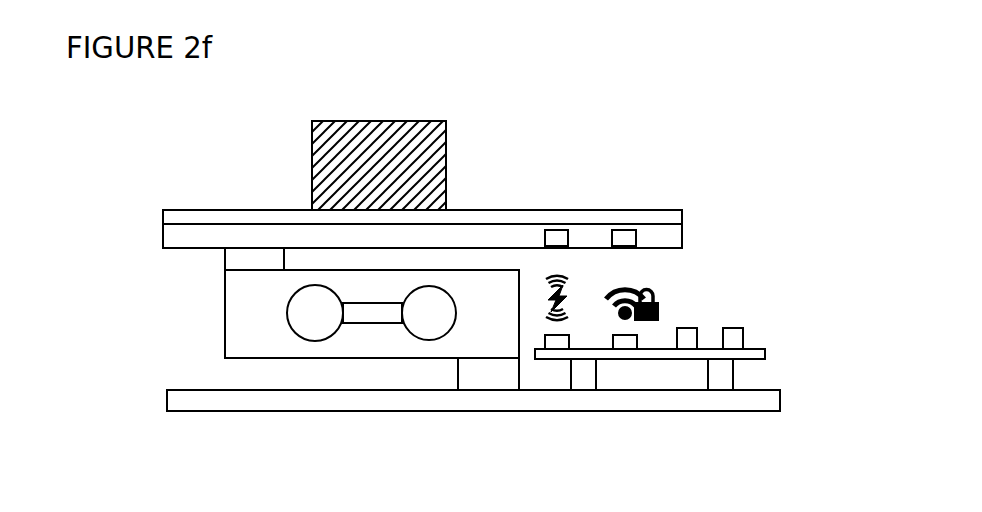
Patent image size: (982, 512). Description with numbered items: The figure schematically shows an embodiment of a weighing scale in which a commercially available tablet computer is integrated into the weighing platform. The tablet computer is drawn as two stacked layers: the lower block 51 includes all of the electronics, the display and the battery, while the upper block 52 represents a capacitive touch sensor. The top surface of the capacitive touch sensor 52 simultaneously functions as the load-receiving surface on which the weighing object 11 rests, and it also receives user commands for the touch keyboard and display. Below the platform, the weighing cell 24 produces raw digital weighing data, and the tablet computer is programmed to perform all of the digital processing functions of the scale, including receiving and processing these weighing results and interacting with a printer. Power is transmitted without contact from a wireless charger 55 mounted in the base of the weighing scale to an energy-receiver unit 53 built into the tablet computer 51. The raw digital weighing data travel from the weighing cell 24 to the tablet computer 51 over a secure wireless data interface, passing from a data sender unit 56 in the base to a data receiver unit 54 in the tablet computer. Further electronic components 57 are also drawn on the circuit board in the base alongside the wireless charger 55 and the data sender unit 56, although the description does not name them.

The weighing object 11 is at (386, 134).
The weighing cell 24 is at (239, 321).
The tablet computer electronics block 51 is at (667, 237).
The capacitive touch sensor 52 is at (249, 218).
The energy-receiver unit 53 is at (555, 234).
The data receiver unit 54 is at (622, 234).
The contact-free wireless charger 55 is at (555, 346).
The data sender unit 56 is at (623, 346).
The electronic components 57 is at (733, 342).